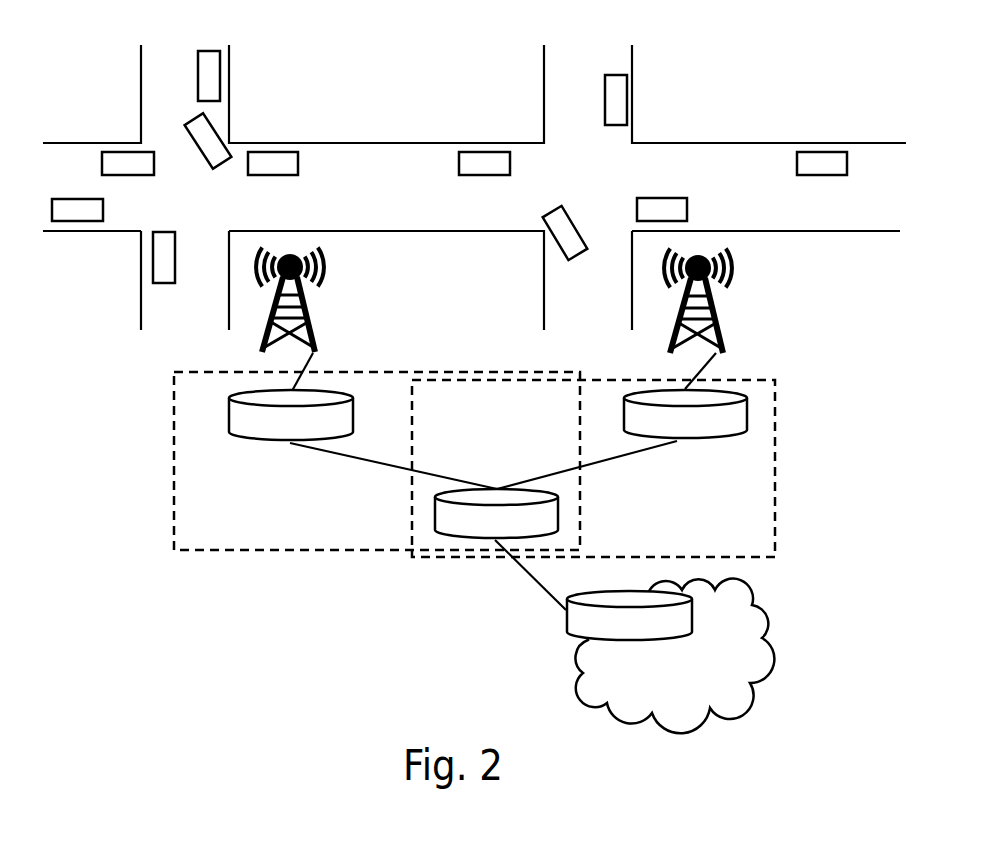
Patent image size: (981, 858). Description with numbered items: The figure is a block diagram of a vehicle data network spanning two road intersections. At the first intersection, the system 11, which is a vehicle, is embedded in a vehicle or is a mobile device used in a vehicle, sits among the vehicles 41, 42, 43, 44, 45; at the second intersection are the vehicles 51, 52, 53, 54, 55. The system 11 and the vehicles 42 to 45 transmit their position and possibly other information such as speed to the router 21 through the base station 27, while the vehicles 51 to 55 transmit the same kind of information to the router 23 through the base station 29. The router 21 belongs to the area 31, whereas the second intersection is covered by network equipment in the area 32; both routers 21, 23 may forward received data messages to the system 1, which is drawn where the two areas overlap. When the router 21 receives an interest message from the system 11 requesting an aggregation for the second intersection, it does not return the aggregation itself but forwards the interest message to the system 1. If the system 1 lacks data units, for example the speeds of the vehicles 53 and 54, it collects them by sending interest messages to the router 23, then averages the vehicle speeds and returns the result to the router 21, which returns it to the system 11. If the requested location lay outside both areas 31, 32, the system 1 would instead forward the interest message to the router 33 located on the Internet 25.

The system 1 is at (496, 513).
The system 11 is at (73, 221).
The router 21 is at (291, 415).
The router 23 is at (685, 414).
The Internet 25 is at (664, 679).
The base station 27 is at (307, 320).
The base station 29 is at (715, 320).
The area 31 is at (189, 543).
The area 32 is at (732, 549).
The router 33 is at (629, 615).
The vehicle 41 is at (127, 151).
The vehicle 42 is at (165, 283).
The vehicle 43 is at (220, 63).
The vehicle 44 is at (218, 163).
The vehicle 45 is at (294, 151).
The vehicle 51 is at (482, 151).
The vehicle 52 is at (575, 258).
The vehicle 53 is at (627, 95).
The vehicle 54 is at (687, 205).
The vehicle 55 is at (830, 151).